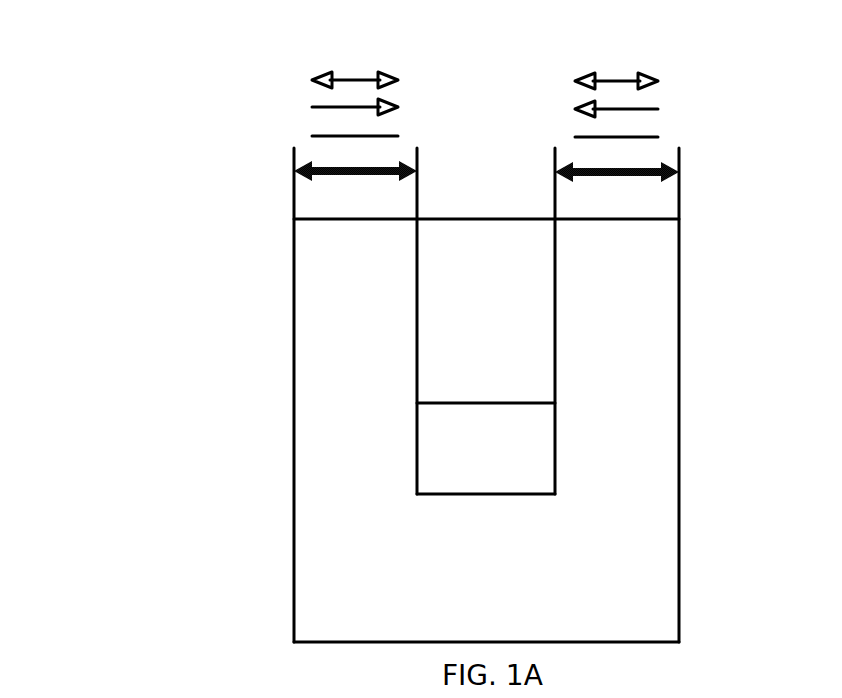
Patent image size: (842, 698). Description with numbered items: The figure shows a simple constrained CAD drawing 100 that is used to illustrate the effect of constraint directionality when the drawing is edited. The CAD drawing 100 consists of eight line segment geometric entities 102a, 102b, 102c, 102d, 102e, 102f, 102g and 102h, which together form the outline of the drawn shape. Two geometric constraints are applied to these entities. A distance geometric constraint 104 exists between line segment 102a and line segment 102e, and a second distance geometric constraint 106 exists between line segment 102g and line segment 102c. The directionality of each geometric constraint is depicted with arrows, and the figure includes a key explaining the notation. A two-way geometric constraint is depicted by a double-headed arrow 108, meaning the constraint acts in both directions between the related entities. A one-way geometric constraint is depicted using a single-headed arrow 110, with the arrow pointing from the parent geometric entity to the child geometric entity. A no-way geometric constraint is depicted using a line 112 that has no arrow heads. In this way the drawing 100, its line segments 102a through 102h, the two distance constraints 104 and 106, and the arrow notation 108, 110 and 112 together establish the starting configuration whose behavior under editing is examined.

The CAD drawing 100 is at (86, 58).
The line segment geometric entity 102a is at (294, 393).
The line segment geometric entity 102b is at (392, 642).
The line segment geometric entity 102c is at (679, 372).
The line segment geometric entity 102d is at (525, 219).
The line segment geometric entity 102e is at (417, 333).
The line segment geometric entity 102f is at (475, 495).
The line segment geometric entity 102g is at (555, 353).
The line segment geometric entity 102h is at (507, 403).
The distance geometric constraint 104 is at (332, 172).
The second distance geometric constraint 106 is at (654, 173).
The double-headed arrow 108 is at (658, 81).
The single-headed arrow 110 is at (658, 109).
The line 112 is at (658, 137).